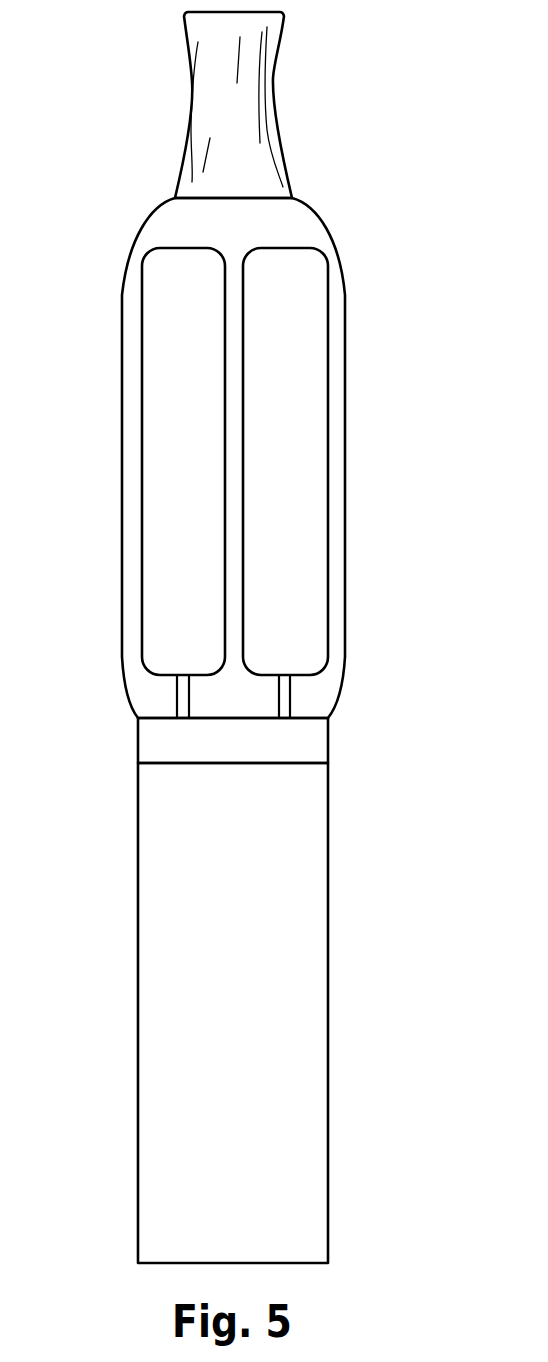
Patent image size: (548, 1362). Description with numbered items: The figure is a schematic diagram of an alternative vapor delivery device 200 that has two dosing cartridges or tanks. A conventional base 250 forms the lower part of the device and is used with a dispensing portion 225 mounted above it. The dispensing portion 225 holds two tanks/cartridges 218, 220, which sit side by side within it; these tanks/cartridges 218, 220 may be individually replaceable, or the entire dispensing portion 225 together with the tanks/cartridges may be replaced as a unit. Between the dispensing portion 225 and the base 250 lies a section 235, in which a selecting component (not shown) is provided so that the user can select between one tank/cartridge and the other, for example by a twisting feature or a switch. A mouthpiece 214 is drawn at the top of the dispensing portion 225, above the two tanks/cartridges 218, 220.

The device 200 is at (418, 102).
The mouthpiece 214 is at (273, 135).
The dispensing portion 225 is at (322, 231).
The tank/cartridge 220 is at (162, 453).
The tank/cartridge 218 is at (305, 467).
The section 235 is at (280, 747).
The conventional base 250 is at (328, 880).